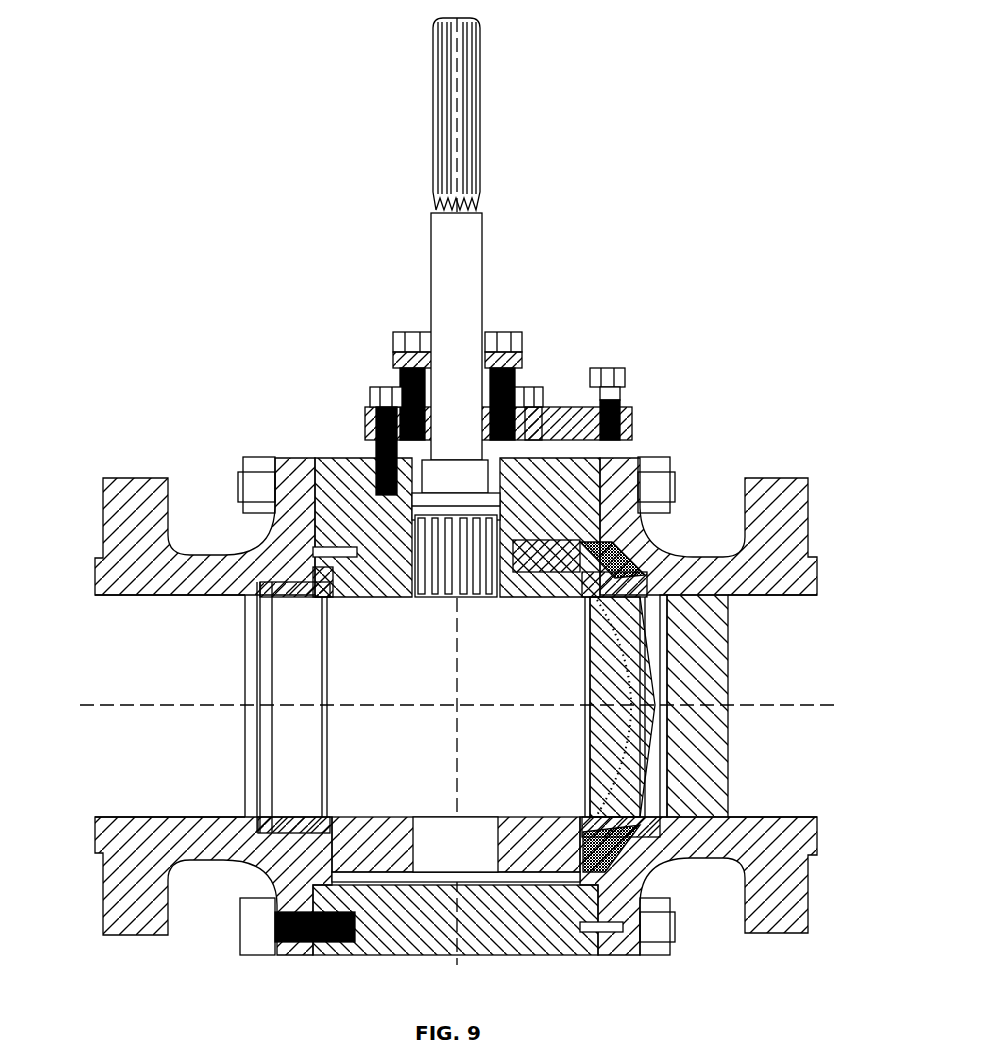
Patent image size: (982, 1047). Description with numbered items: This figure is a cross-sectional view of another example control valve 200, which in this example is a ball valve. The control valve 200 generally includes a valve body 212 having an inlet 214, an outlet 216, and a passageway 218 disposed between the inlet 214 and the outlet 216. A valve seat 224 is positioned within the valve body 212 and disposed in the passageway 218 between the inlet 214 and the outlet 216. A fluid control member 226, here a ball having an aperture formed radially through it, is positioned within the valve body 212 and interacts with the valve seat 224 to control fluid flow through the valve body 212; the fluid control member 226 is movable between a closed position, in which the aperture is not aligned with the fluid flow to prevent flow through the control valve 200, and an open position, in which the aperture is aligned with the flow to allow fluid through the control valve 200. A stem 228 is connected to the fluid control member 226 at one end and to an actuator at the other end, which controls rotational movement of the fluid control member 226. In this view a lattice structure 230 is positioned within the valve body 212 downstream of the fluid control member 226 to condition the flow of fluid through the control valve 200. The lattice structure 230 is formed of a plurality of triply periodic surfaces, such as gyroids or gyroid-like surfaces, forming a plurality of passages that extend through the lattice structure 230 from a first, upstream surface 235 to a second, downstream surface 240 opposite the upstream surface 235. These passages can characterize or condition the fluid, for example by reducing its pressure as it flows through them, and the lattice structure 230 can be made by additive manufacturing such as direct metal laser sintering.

The control valve 200 is at (226, 155).
The valve body 212 is at (140, 490).
The inlet 214 is at (118, 680).
The outlet 216 is at (805, 625).
The passageway 218 is at (338, 573).
The valve seat 224 is at (287, 580).
The fluid control member 226 is at (530, 517).
The stem 228 is at (470, 261).
The lattice structure 230 is at (708, 780).
The first, upstream surface 235 is at (663, 627).
The second, downstream surface 240 is at (733, 686).